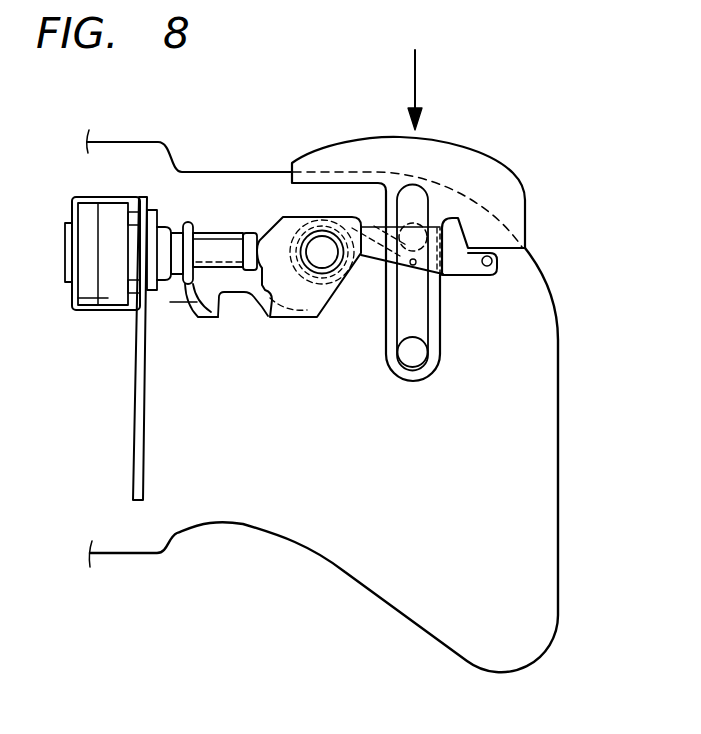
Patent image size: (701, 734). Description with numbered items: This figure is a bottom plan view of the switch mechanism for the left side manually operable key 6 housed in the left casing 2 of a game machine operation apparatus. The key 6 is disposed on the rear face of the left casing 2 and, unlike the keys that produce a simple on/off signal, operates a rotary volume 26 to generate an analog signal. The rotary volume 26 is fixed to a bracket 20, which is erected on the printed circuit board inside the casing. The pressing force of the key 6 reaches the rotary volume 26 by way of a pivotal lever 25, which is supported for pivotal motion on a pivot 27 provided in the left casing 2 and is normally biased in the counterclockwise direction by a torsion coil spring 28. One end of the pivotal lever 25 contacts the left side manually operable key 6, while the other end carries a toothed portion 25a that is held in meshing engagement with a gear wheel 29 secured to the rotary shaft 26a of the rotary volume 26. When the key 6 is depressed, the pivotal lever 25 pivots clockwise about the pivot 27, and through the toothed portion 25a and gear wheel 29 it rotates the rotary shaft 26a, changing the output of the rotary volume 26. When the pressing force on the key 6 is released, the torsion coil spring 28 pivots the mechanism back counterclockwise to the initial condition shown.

The left casing 2 is at (543, 510).
The left side manually operable key 6 is at (498, 172).
The bracket 20 is at (138, 395).
The pivotal lever 25 is at (320, 318).
The toothed portion 25a is at (197, 318).
The rotary volume 26 is at (113, 207).
The rotary shaft 26a is at (222, 231).
The pivot 27 is at (320, 240).
The torsion coil spring 28 is at (272, 314).
The gear wheel 29 is at (187, 222).